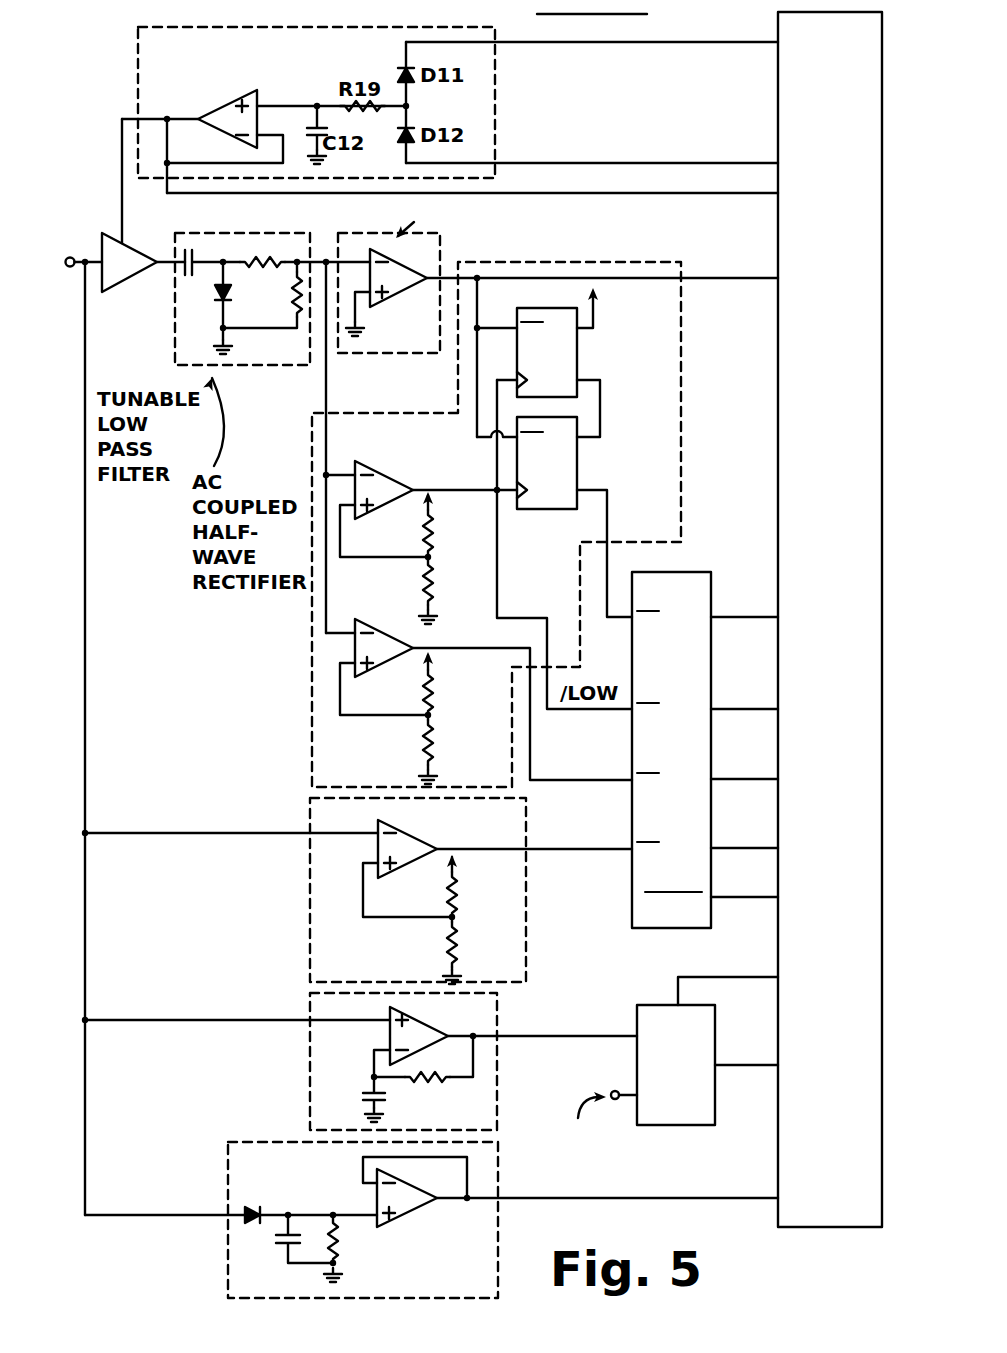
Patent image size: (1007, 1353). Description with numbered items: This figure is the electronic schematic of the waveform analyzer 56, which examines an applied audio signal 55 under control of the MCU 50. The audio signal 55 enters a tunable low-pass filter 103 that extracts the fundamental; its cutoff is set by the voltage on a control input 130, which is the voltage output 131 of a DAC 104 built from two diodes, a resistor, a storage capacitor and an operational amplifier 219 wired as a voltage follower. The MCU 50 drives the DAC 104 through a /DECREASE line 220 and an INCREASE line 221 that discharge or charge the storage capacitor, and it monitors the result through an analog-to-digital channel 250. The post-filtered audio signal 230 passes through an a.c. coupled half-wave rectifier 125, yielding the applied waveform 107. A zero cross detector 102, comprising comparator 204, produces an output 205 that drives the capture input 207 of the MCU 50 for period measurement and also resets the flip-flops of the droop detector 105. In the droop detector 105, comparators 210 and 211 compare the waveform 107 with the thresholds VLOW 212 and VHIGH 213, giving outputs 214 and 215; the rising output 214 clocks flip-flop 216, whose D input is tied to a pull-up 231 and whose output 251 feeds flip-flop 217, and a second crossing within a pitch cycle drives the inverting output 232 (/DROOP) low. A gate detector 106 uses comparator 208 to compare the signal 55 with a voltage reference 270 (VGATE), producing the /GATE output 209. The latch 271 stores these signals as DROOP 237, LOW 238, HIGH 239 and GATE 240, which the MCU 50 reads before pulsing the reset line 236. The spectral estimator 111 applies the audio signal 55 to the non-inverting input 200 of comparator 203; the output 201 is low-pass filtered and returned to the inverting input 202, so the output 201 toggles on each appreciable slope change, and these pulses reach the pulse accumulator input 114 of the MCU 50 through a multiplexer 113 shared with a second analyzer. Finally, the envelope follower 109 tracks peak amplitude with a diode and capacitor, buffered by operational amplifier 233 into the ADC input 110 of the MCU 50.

The MCU 50 is at (849, 481).
The applied audio signal 55 is at (78, 258).
The waveform analyzer 56 is at (101, 1250).
The zero cross detector 102 is at (395, 355).
The tunable low-pass filter 103 is at (118, 238).
The digital-to-analog converter 104 is at (138, 37).
The droop detector 105 is at (308, 634).
The gate detector 106 is at (308, 822).
The applied waveform 107 is at (326, 262).
The envelope follower 109 is at (500, 1252).
The ADC input 110 is at (758, 1226).
The spectral estimator 111 is at (308, 1006).
The multiplexer 113 is at (716, 1114).
The pulse accumulator input 114 is at (774, 1062).
The a.c. coupled half-wave rectifier 125 is at (285, 368).
The control input 130 is at (140, 262).
The voltage output 131 is at (167, 117).
The non-inverting input 200 is at (384, 1026).
The output 201 is at (448, 1036).
The inverting input 202 is at (376, 1050).
The comparator 203 is at (388, 1016).
The comparator 204 is at (410, 290).
The output 205 is at (458, 262).
The capture input 207 is at (776, 282).
The comparator 208 is at (404, 836).
The output 209 is at (486, 838).
The comparator 210 is at (380, 462).
The comparator 211 is at (380, 628).
The VLOW threshold 212 is at (424, 556).
The VHIGH threshold 213 is at (424, 714).
The output 214 is at (414, 490).
The output 215 is at (500, 648).
The flip-flop 216 is at (578, 352).
The flip-flop 217 is at (547, 512).
The operational amplifier 219 is at (228, 100).
The /DECREASE line 220 is at (690, 42).
The INCREASE line 221 is at (683, 160).
The post-filtered audio signal 230 is at (162, 274).
The D1 input pull-up 231 is at (594, 322).
The inverting output 232 is at (608, 520).
The operational amplifier 233 is at (410, 1214).
The reset line 236 is at (752, 904).
The DROOP 237 is at (752, 622).
The LOW 238 is at (756, 714).
The HIGH 239 is at (752, 784).
The GATE 240 is at (744, 852).
The analog-to-digital channel 250 is at (776, 196).
The output 251 is at (600, 418).
The voltage reference 270 is at (378, 863).
The latch 271 is at (688, 572).